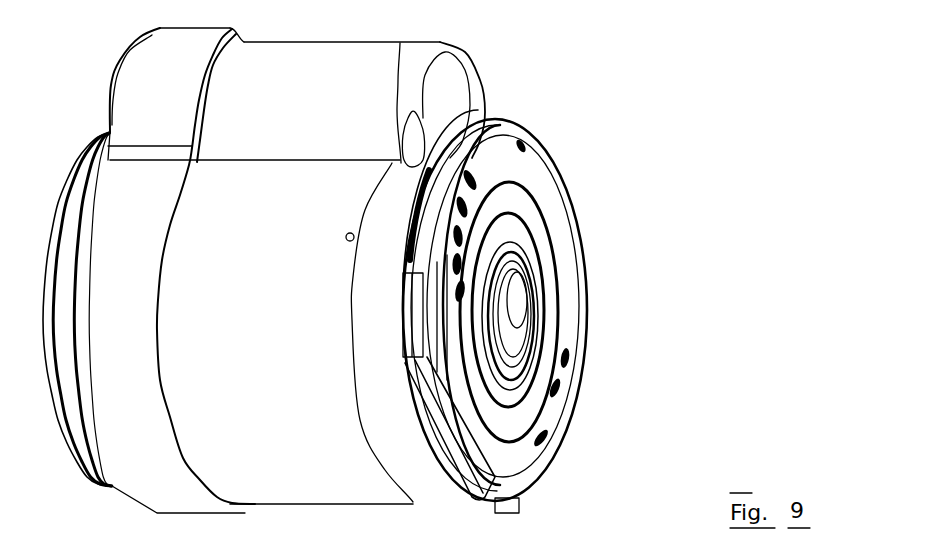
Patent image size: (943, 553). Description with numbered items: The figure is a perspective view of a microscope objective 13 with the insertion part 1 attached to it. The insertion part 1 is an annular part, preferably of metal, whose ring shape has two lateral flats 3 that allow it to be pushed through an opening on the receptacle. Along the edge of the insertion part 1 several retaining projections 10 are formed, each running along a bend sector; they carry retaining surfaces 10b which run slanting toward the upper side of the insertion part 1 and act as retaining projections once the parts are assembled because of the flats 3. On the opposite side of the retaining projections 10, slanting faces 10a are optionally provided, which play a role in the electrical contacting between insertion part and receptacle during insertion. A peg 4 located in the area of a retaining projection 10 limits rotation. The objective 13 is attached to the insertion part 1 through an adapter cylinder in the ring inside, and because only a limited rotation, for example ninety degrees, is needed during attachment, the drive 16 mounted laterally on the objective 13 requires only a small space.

The insertion part 1 is at (623, 161).
The lateral flat 3 is at (550, 190).
The peg 4 is at (523, 507).
The retaining projection 10 is at (403, 300).
The slanting face 10a is at (495, 128).
The retaining surface 10b is at (407, 322).
The microscope objective 13 is at (112, 505).
The drive 16 is at (392, 47).